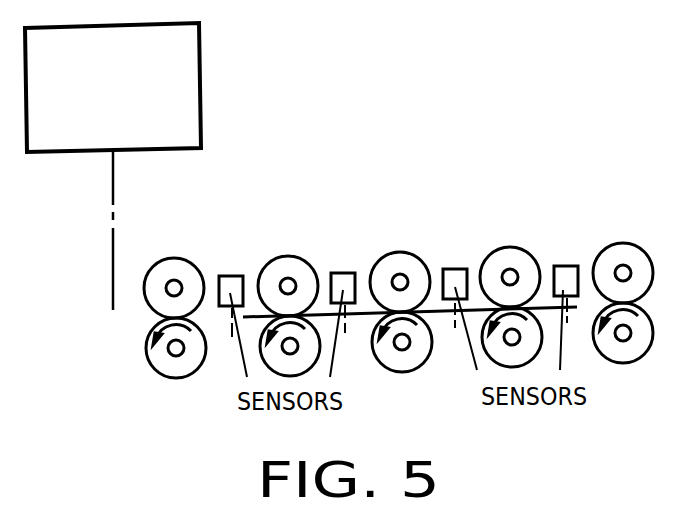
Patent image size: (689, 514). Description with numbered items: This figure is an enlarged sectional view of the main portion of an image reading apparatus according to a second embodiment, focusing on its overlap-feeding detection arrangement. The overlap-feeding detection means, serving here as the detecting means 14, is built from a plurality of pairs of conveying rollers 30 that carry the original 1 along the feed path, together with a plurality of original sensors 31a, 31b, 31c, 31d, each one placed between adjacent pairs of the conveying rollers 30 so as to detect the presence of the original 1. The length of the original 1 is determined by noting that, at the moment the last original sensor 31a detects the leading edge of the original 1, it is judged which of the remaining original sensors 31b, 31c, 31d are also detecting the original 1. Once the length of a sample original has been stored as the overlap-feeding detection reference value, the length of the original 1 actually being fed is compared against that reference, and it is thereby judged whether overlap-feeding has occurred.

The original 1 is at (440, 312).
The detecting means 14 is at (200, 80).
The conveying rollers 30 is at (175, 258).
The original sensor 31a is at (235, 275).
The original sensor 31b is at (343, 273).
The original sensor 31c is at (458, 268).
The original sensor 31d is at (568, 265).